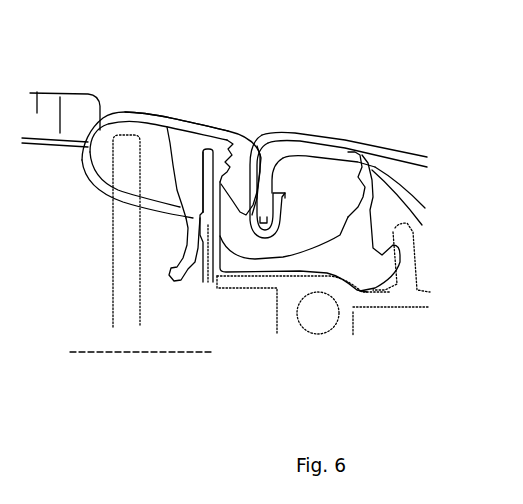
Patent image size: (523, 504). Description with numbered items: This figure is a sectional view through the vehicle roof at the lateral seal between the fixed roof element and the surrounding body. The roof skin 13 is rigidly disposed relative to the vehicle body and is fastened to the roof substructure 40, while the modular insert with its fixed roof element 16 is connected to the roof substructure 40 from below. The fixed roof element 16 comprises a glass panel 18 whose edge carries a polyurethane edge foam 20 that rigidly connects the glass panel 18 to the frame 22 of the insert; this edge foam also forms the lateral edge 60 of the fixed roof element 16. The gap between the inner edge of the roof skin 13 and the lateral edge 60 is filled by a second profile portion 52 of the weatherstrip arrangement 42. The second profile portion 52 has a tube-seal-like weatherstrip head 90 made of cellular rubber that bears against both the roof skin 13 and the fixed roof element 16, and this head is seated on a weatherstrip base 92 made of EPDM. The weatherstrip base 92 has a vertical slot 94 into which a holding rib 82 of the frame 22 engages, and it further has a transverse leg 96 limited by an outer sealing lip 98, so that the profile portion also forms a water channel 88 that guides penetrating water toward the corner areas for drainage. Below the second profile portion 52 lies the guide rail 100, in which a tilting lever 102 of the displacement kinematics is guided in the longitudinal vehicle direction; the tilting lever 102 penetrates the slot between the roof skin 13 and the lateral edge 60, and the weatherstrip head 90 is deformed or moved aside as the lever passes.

The roof skin 13 is at (321, 142).
The fixed roof element 16 is at (49, 92).
The glass panel 18 is at (37, 85).
The edge foam 20 is at (69, 126).
The frame 22 is at (338, 332).
The roof substructure 40 is at (403, 180).
The weatherstrip arrangement 42 is at (215, 124).
The second profile portion 52 is at (172, 116).
The lateral edge 60 is at (98, 112).
The holding rib 82 is at (209, 226).
The water channel 88 is at (328, 212).
The weatherstrip head 90 is at (131, 117).
The weatherstrip base 92 is at (186, 265).
The vertical slot 94 is at (203, 216).
The transverse leg 96 is at (297, 262).
The outer sealing lip 98 is at (372, 168).
The guide rail 100 is at (148, 354).
The tilting lever 102 is at (122, 298).